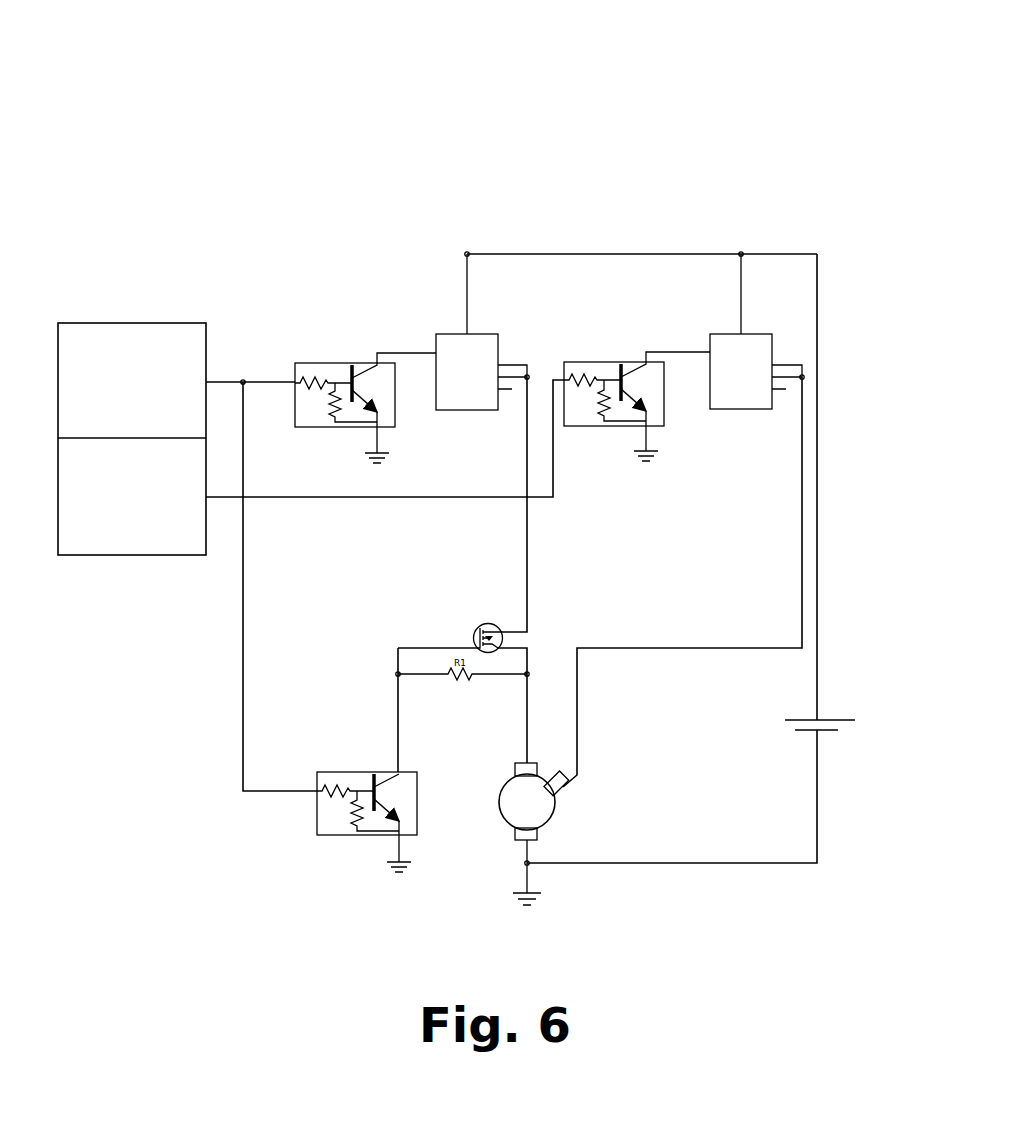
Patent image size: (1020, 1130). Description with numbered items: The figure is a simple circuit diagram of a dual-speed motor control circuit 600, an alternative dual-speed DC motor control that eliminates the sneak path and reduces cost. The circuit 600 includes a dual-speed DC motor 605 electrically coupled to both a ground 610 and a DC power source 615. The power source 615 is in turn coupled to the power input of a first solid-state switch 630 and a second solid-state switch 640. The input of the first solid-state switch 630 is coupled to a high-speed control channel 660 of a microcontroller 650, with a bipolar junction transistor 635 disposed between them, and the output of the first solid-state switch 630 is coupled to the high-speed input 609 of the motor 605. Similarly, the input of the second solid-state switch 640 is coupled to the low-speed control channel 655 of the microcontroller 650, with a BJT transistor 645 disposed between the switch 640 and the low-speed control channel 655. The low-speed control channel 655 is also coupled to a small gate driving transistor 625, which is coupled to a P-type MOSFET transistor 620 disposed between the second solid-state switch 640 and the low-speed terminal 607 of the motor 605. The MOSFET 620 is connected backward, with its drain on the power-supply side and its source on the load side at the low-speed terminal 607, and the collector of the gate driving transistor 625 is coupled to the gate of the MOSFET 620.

The dual-speed motor control circuit 600 is at (405, 112).
The dual-speed DC motor 605 is at (500, 800).
The low-speed terminal 607 is at (515, 770).
The high-speed input 609 is at (560, 797).
The ground 610 is at (398, 845).
The DC power source 615 is at (843, 728).
The P-type MOSFET transistor 620 is at (540, 640).
The gate driving transistor 625 is at (348, 773).
The first solid-state switch 630 is at (758, 334).
The bipolar junction transistor 635 is at (595, 361).
The second solid-state switch 640 is at (482, 334).
The BJT transistor 645 is at (323, 364).
The microcontroller 650 is at (132, 372).
The low-speed control channel 655 is at (132, 399).
The high-speed control channel 660 is at (132, 512).